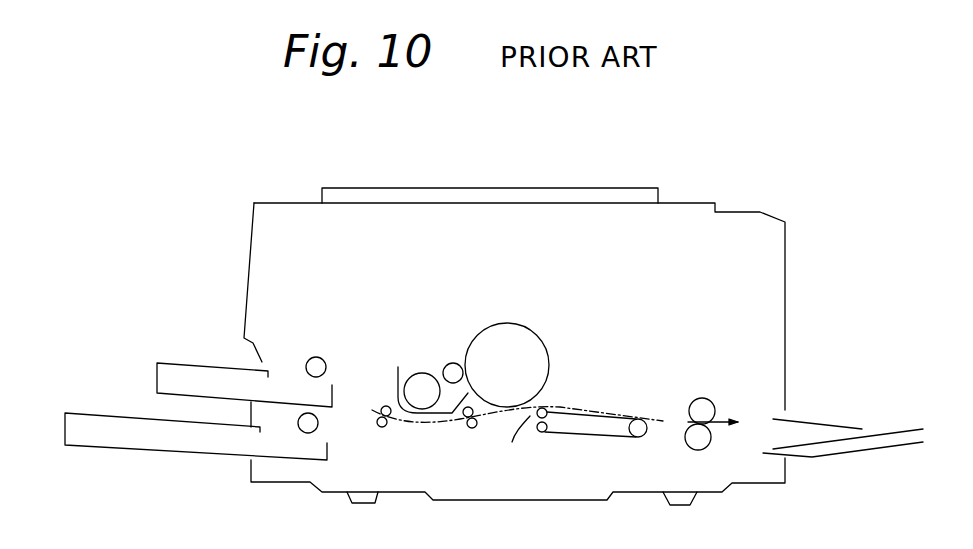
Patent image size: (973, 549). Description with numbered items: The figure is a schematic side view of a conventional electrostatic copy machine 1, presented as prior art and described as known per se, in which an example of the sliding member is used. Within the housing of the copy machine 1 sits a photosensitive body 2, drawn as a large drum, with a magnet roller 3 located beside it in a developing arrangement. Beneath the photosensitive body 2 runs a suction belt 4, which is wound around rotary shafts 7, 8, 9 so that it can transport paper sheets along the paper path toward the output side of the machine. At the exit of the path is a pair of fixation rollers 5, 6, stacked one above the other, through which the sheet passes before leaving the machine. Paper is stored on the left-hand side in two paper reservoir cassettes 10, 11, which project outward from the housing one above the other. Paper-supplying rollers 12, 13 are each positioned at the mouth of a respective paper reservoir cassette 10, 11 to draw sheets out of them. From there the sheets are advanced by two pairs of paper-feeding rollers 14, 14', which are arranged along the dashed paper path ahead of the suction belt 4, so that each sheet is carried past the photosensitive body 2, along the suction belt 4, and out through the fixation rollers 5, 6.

The electrostatic copy machine 1 is at (777, 213).
The photosensitive body 2 is at (515, 323).
The magnet roller 3 is at (452, 360).
The suction belt 4 is at (598, 435).
The fixation roller 5 is at (705, 398).
The fixation roller 6 is at (710, 445).
The rotary shaft 7 is at (515, 444).
The rotary shaft 8 is at (543, 432).
The rotary shaft 9 is at (645, 436).
The paper reservoir cassette 10 is at (193, 363).
The paper reservoir cassette 11 is at (113, 414).
The paper-supplying roller 12 is at (313, 357).
The paper-supplying roller 13 is at (318, 424).
The paper-feeding rollers 14 is at (392, 443).
The paper-feeding rollers 14' is at (456, 443).